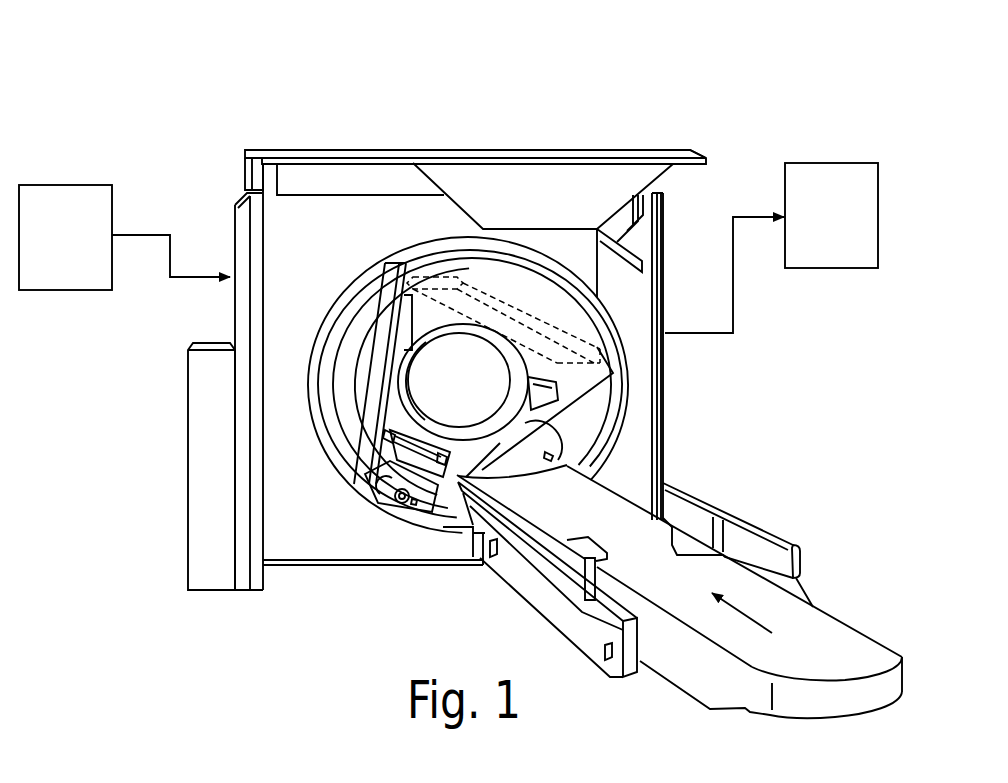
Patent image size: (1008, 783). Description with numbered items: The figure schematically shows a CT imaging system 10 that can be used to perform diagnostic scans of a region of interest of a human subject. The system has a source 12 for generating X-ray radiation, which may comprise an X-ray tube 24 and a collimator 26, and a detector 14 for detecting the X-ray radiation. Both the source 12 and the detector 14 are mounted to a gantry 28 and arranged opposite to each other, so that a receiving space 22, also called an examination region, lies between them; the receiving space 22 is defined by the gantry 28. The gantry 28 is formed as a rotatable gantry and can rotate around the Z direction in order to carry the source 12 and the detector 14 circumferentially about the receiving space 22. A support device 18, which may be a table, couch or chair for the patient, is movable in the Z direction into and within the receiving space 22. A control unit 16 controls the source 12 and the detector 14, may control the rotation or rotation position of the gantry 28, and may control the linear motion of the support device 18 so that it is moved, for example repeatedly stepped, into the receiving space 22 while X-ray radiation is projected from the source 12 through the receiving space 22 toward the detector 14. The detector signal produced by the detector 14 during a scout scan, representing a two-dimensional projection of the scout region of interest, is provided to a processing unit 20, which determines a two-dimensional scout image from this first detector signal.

The CT imaging system 10 is at (657, 84).
The source 12 is at (413, 540).
The detector 14 is at (442, 278).
The control unit 16 is at (52, 247).
The support device 18 is at (845, 650).
The processing unit 20 is at (818, 232).
The receiving space 22 is at (444, 392).
The X-ray tube 24 is at (387, 499).
The collimator 26 is at (363, 478).
The gantry 28 is at (338, 299).